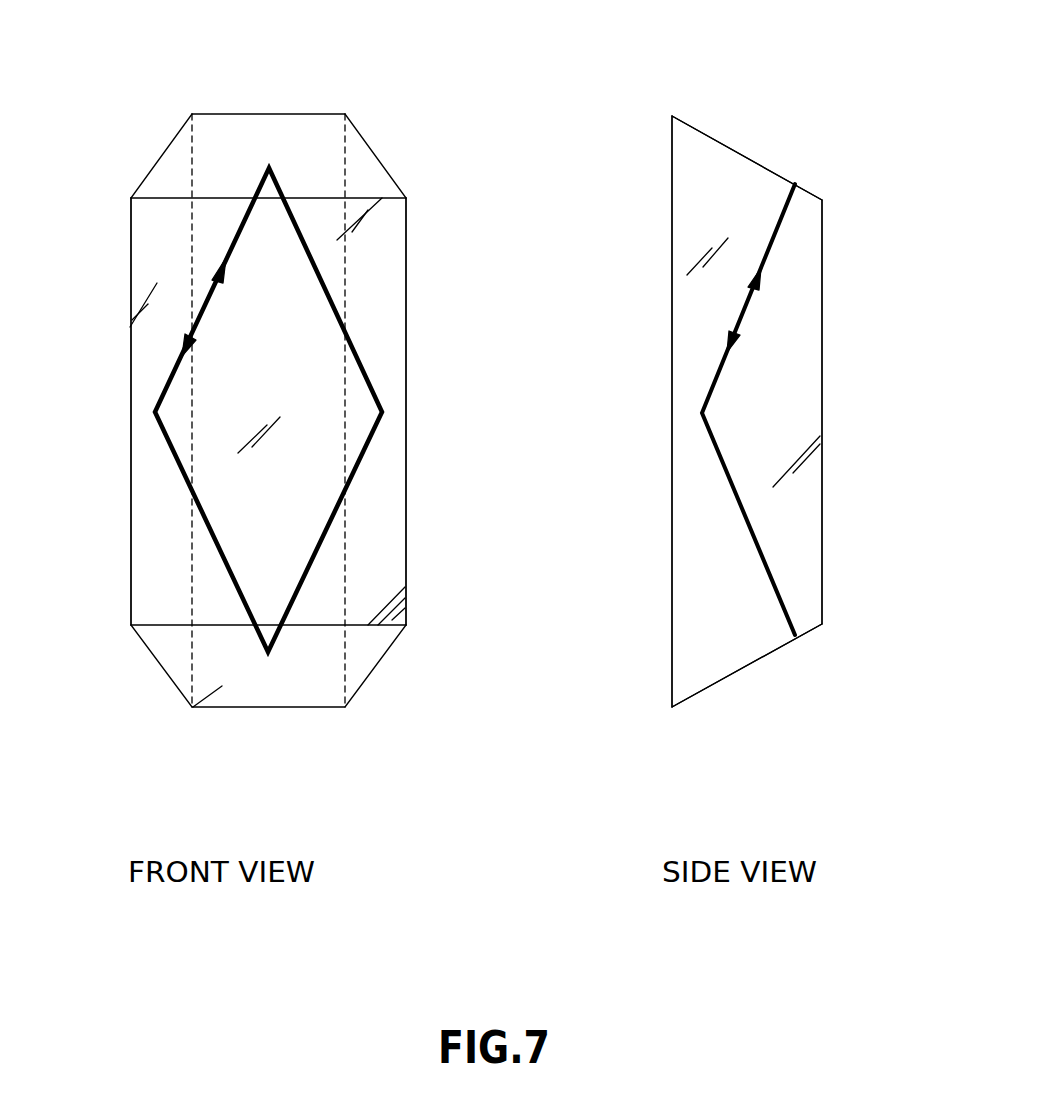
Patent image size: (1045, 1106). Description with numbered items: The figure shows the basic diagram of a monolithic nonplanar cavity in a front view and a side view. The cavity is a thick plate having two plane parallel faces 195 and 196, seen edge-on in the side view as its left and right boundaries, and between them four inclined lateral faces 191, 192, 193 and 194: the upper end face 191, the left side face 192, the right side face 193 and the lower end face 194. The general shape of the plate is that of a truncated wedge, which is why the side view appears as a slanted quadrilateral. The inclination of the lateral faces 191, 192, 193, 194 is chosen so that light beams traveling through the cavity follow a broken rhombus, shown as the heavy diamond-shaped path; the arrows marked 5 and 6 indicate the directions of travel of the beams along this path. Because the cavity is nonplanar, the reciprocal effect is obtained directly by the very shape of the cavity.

The inclined lateral face 191 is at (247, 120).
The inclined lateral face 192 is at (148, 378).
The inclined lateral face 193 is at (380, 313).
The inclined lateral face 194 is at (193, 707).
The plane parallel face 195 is at (671, 467).
The plane parallel face 196 is at (827, 452).
The incident laser beam 5 is at (228, 273).
The reflected laser beam 6 is at (193, 355).